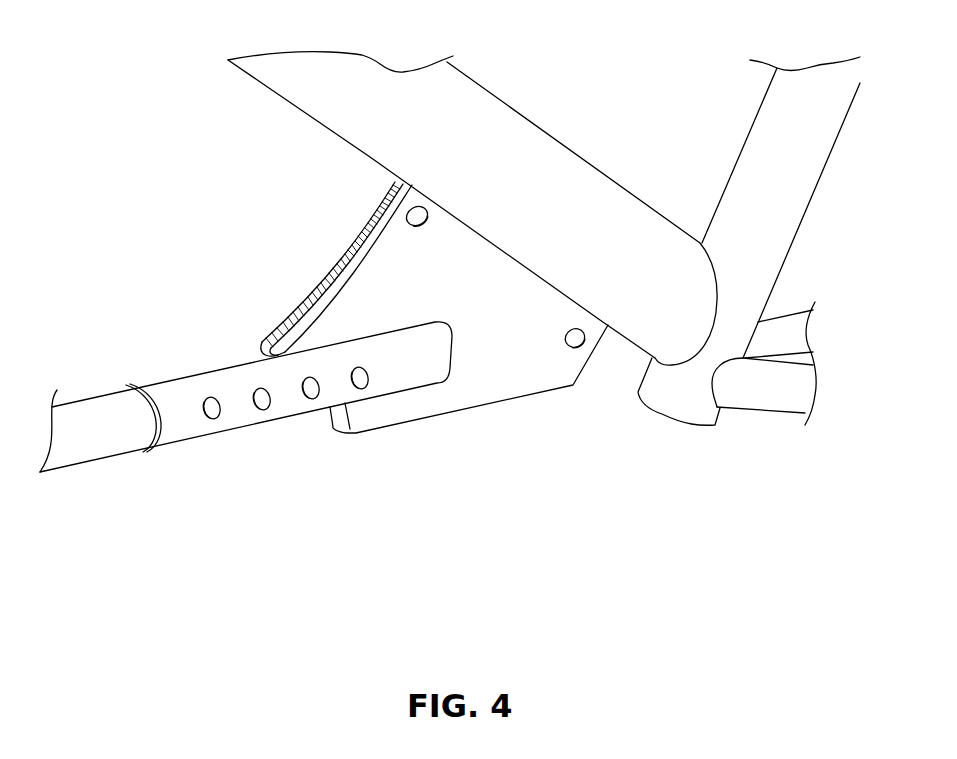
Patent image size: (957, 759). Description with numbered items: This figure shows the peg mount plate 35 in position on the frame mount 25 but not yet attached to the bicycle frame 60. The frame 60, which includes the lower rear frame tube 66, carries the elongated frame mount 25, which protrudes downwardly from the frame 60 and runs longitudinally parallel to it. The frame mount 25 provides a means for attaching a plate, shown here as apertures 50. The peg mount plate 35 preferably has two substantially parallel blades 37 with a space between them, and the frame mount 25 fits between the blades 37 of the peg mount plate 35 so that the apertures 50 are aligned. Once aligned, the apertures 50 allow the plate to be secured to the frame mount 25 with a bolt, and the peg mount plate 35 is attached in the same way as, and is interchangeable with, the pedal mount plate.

The frame mount 25 is at (377, 206).
The peg mount plate 35 is at (479, 383).
The blade 37 is at (283, 327).
The apertures 50 is at (420, 225).
The frame 60 is at (554, 212).
The lower rear frame tube 66 is at (778, 198).